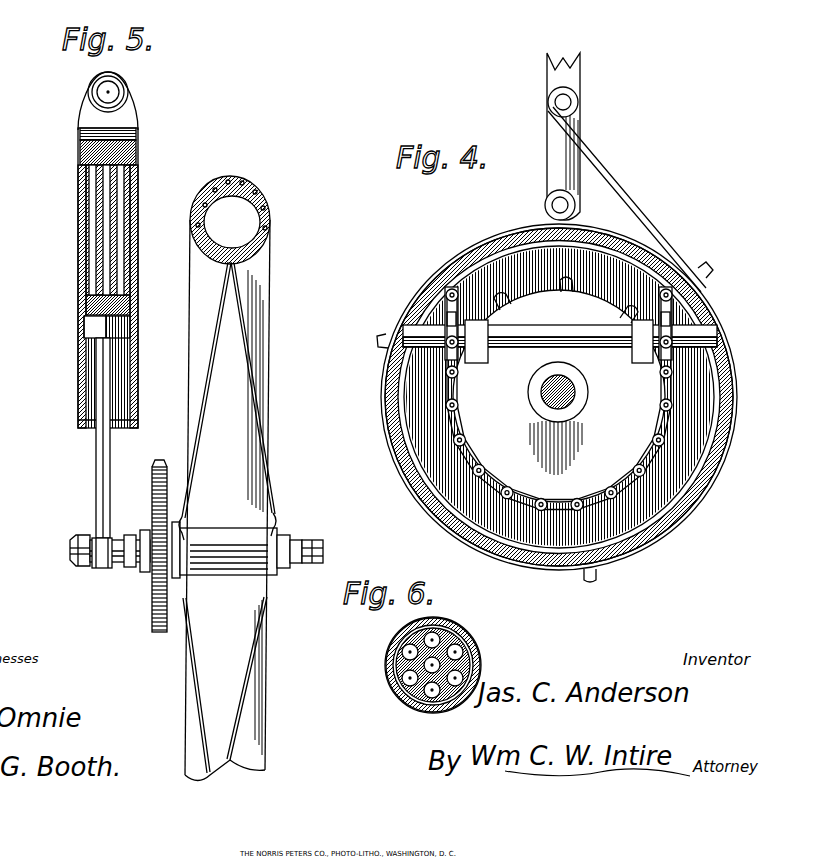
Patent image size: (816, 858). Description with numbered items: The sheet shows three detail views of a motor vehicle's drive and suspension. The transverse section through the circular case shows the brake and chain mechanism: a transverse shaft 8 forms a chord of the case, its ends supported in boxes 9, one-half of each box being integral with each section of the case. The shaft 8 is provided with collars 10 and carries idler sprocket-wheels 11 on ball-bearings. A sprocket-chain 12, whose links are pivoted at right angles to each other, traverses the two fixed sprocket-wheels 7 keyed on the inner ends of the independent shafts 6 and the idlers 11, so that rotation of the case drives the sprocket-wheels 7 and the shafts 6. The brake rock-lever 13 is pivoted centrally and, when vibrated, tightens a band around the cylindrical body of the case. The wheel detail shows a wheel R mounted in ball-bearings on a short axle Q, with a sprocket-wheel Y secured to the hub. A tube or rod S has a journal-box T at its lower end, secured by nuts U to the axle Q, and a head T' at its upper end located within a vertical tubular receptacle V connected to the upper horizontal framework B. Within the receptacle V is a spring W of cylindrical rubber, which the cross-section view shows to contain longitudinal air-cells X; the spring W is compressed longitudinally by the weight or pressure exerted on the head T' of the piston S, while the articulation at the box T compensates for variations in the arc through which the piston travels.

In FIG. 5, the upper horizontal framework B is at (129, 92).
In FIG. 5, the spring W is at (138, 150).
In FIG. 6, the spring W is at (394, 667).
In FIG. 5, the sprocket-wheel Y is at (86, 224).
In FIG. 5, the head T' is at (60, 336).
In FIG. 6, the head T' is at (412, 665).
In FIG. 5, the vertical tubular receptacle V is at (130, 342).
In FIG. 5, the tube or rod S is at (96, 452).
In FIG. 5, the wheel R is at (262, 373).
In FIG. 5, the short axle Q is at (70, 548).
In FIG. 5, the nut U is at (84, 565).
In FIG. 5, the journal-box T is at (95, 578).
In FIG. 4, the independent shaft 6 is at (575, 392).
In FIG. 4, the sprocket-wheel 7 is at (559, 389).
In FIG. 4, the transverse shaft 8 is at (560, 335).
In FIG. 4, the box 9 is at (557, 403).
In FIG. 4, the collar 10 is at (482, 318).
In FIG. 4, the idler sprocket-wheel 11 is at (632, 210).
In FIG. 4, the sprocket-chain 12 is at (540, 462).
In FIG. 4, the rock-lever 13 is at (576, 88).
In FIG. 6, the longitudinal air-cell X is at (397, 690).